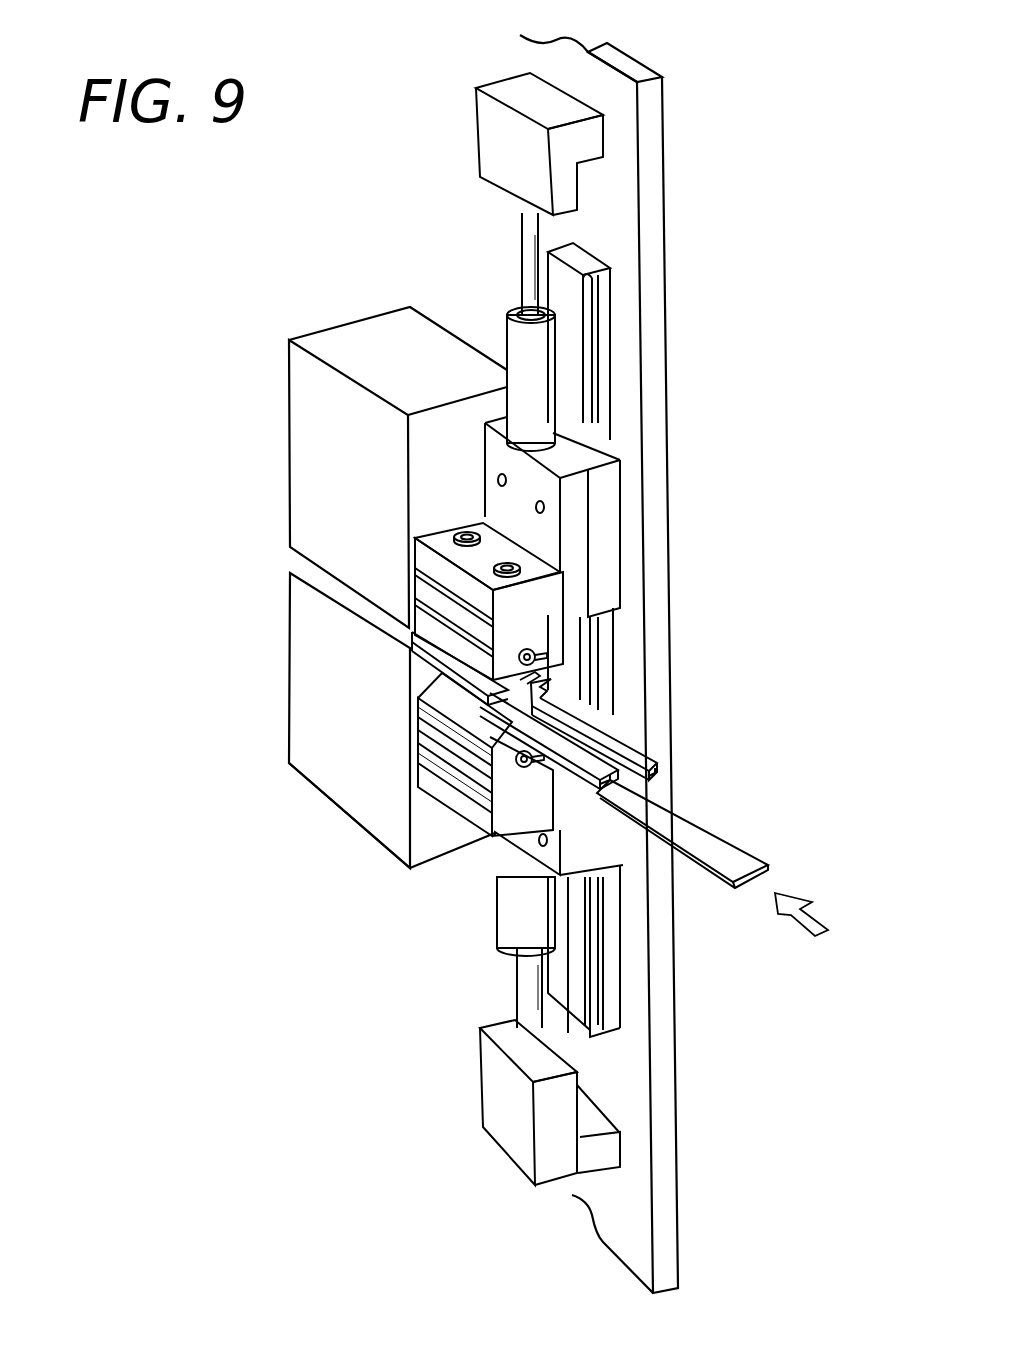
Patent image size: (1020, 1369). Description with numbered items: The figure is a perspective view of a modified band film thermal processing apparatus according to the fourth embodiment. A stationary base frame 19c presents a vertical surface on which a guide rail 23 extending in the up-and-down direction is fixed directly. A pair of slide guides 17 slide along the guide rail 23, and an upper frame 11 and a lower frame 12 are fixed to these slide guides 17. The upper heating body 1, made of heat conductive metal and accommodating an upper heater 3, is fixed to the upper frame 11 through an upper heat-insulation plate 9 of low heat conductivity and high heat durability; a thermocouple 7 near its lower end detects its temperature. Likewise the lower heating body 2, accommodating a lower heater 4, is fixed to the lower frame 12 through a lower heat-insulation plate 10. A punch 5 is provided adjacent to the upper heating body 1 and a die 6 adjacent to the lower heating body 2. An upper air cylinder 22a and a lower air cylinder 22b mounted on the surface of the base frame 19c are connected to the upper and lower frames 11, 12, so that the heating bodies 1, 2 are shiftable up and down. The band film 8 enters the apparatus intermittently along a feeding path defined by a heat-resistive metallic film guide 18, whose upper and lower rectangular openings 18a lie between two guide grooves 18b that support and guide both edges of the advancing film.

The upper heating body 1 is at (410, 609).
The lower heating body 2 is at (427, 718).
The upper heater 3 is at (410, 632).
The lower heater 4 is at (490, 763).
The punch 5 is at (345, 330).
The die 6 is at (388, 838).
The thermocouple 7 is at (552, 660).
The band film 8 is at (745, 853).
The upper heat-insulation plate 9 is at (408, 580).
The lower heat-insulation plate 10 is at (427, 740).
The upper frame 11 is at (482, 523).
The lower frame 12 is at (427, 765).
The slide guides 17 is at (613, 523).
The film guide 18 is at (670, 745).
The rectangular openings 18a is at (440, 670).
The guide grooves 18b is at (573, 750).
The stationary base frame 19c is at (637, 70).
The upper air cylinder 22a is at (482, 117).
The lower air cylinder 22b is at (507, 1137).
The guide rail 23 is at (613, 630).